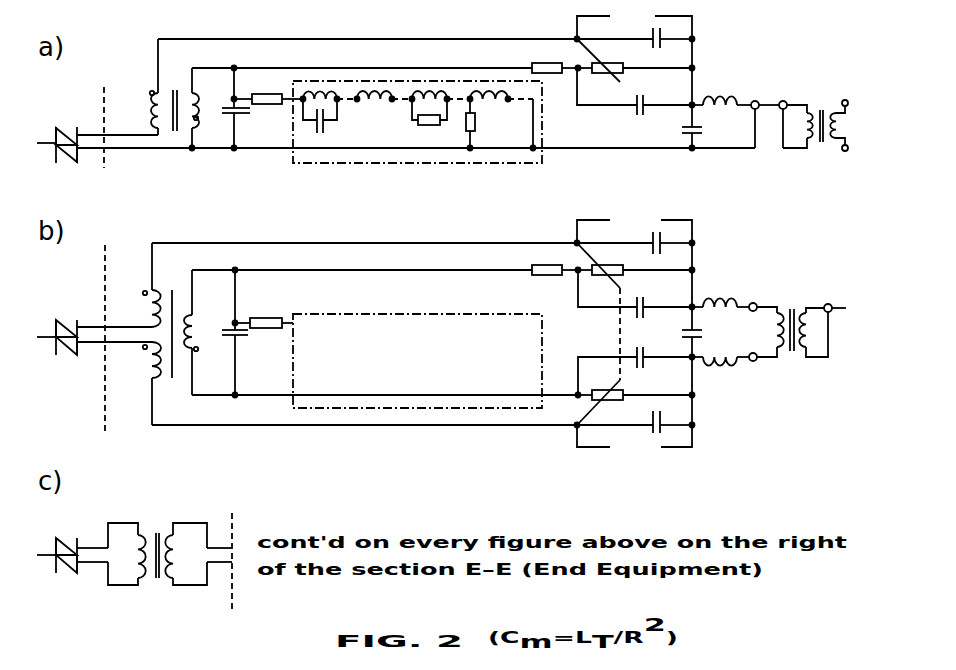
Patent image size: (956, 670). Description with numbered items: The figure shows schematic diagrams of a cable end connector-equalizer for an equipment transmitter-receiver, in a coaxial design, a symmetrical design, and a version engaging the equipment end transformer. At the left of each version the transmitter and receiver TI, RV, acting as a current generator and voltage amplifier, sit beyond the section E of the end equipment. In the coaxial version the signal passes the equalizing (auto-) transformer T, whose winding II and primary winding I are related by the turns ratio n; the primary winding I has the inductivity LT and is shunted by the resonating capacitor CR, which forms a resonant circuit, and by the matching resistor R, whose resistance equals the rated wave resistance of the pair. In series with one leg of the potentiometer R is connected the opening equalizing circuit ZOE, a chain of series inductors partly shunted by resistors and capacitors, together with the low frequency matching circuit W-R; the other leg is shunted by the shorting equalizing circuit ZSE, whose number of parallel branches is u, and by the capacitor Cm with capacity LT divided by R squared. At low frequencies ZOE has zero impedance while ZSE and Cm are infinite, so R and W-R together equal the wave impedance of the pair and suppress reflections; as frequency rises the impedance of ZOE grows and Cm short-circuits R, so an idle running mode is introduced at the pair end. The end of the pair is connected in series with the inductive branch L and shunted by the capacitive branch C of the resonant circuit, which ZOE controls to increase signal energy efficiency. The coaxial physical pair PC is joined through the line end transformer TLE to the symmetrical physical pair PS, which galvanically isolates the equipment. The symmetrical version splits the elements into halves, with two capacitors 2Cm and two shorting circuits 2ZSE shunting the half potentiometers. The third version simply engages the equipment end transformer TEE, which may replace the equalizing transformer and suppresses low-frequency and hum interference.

The transmitter TI is at (57, 339).
The receiver RV is at (74, 320).
The section E- E is at (167, 350).
The equalizing (auto-) transformer T is at (138, 232).
The secondary winding II is at (143, 110).
The primary winding I is at (201, 220).
The turns ratio n is at (173, 134).
The inductivity of a winding LT is at (214, 237).
The resonating capacitor CR is at (240, 232).
The matching resistor/potentiometer R is at (463, 183).
The opening equalizing circuit ZOE is at (417, 244).
The low frequency matching circuit W-R is at (530, 163).
The number of parallel branches u is at (630, 232).
The shorting equalizing circuit ZSE is at (634, 67).
The capacitor of matching resistor Cm is at (634, 91).
The inductive branch L is at (721, 89).
The capacitive branch C is at (687, 234).
The coaxial physical pair PC is at (769, 195).
The line end transformer TLE is at (801, 219).
The symmetrical physical pair PS is at (798, 224).
The doubled capacitor of matching resistor 2Cm is at (635, 332).
The doubled shorting equalizing circuit 2ZSE is at (634, 341).
The equipment end transformer TEE is at (154, 542).